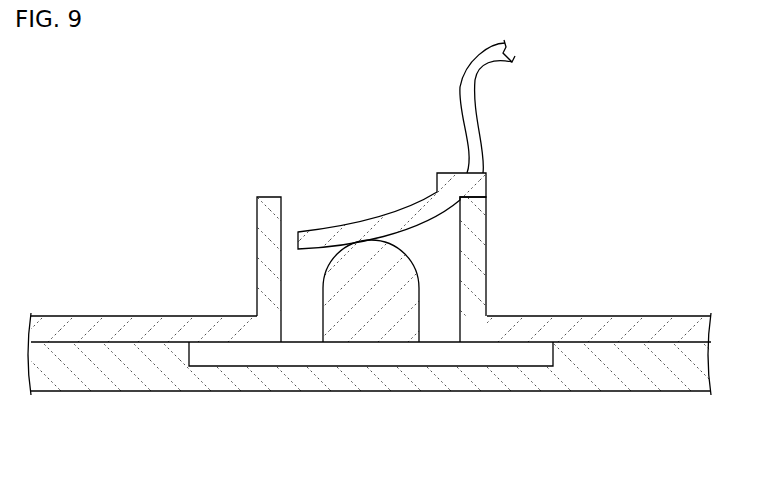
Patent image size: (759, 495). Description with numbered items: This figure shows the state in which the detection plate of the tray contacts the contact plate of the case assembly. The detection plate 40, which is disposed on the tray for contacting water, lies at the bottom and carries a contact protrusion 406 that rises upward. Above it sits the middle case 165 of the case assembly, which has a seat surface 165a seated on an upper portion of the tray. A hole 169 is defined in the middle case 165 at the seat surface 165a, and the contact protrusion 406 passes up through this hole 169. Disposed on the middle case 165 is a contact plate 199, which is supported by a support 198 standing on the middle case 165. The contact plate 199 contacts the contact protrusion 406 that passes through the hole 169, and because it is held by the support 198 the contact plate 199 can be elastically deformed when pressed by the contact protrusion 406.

The detection plate 40 is at (467, 386).
The middle case 165 is at (371, 308).
The seat surface 165a is at (635, 316).
The hole 169 is at (281, 330).
The support 198 is at (486, 230).
The contact plate 199 is at (447, 176).
The contact protrusion 406 is at (368, 280).